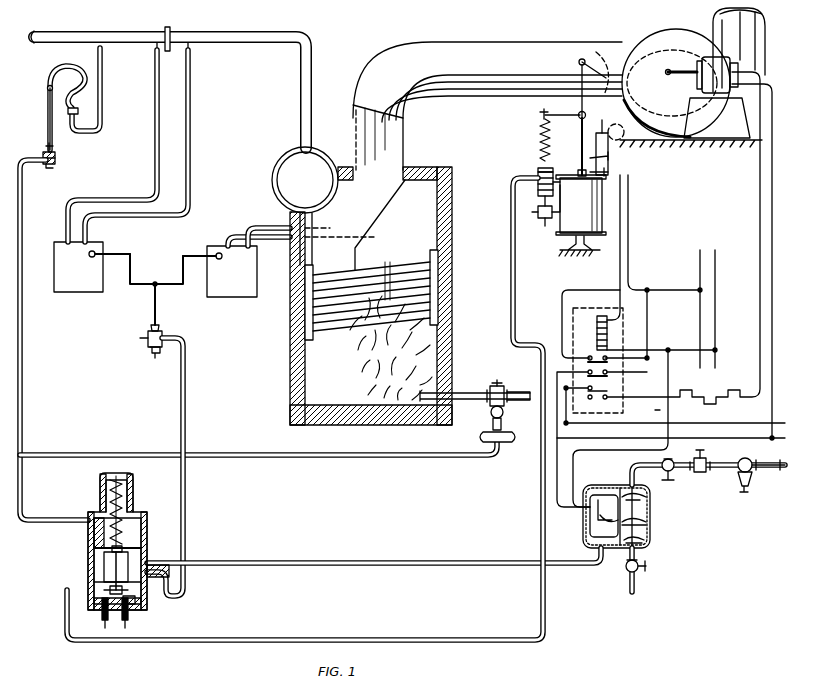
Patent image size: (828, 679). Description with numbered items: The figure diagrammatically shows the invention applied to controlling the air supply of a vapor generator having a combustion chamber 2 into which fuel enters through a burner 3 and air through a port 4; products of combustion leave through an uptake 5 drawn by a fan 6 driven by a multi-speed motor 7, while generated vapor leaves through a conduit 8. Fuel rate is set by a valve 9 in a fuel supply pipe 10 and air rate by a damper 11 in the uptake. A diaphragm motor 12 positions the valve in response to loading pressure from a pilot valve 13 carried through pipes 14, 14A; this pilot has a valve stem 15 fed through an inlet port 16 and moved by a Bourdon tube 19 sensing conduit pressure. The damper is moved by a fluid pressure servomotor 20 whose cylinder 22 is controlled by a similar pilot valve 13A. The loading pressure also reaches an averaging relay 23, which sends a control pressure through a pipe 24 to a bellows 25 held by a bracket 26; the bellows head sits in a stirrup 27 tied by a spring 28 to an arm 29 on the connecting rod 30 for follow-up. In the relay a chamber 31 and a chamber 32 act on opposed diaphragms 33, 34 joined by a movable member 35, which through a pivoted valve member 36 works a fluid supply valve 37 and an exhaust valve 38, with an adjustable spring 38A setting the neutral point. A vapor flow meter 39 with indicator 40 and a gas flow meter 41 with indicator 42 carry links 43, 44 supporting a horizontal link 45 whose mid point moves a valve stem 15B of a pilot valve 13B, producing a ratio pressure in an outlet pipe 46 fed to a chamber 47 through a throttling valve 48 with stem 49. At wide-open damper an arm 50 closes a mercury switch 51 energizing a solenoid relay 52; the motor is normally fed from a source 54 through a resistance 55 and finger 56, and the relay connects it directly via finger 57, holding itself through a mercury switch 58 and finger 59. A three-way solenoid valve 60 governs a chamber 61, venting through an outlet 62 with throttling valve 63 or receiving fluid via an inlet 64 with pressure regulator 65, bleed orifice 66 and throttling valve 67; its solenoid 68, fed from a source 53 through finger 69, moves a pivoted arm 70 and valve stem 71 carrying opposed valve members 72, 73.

The combustion chamber 2 is at (371, 296).
The burner 3 is at (426, 390).
The port 4 is at (450, 397).
The uptake 5 is at (547, 42).
The fan 6 is at (652, 30).
The multi-speed motor 7 is at (706, 40).
The conduit 8 is at (268, 45).
The valve 9 is at (492, 382).
The fuel supply pipe 10 is at (510, 390).
The damper 11 is at (606, 55).
The diaphragm motor 12 is at (512, 416).
The pilot valve 13 is at (54, 163).
The pilot valve 13A is at (540, 222).
The pilot valve 13B is at (148, 342).
The pipe 14 is at (20, 360).
The pipe 14A is at (143, 447).
The valve stem 15 is at (44, 120).
The valve stem 15B is at (155, 318).
The inlet port 16 is at (56, 155).
The Bourdon tube 19 is at (60, 66).
The fluid pressure servomotor 20 is at (577, 254).
The cylinder 22 is at (602, 200).
The averaging relay 23 is at (140, 503).
The pipe 24 is at (288, 640).
The bellows 25 is at (538, 180).
The bracket 26 is at (555, 180).
The stirrup 27 is at (540, 170).
The spring 28 is at (542, 150).
The arm 29 is at (545, 113).
The connecting rod 30 is at (562, 124).
The chamber 31 is at (68, 540).
The chamber 32 is at (65, 578).
The diaphragm 33 is at (138, 530).
The diaphragm 34 is at (136, 578).
The movable member 35 is at (62, 552).
The pivoted valve member 36 is at (140, 596).
The fluid supply valve 37 is at (70, 605).
The exhaust valve 38 is at (104, 615).
The adjustable spring 38A is at (92, 520).
The meter 39 is at (88, 240).
The indicator 40 is at (110, 253).
The meter 41 is at (256, 280).
The indicator 42 is at (206, 256).
The link 43 is at (131, 262).
The link 44 is at (182, 270).
The horizontal link 45 is at (164, 285).
The outlet pipe 46 is at (183, 400).
The chamber 47 is at (70, 567).
The throttling valve 48 is at (170, 565).
The stem 49 is at (172, 575).
The arm 50 is at (596, 133).
The mercury switch 51 is at (612, 160).
The solenoid relay 52 is at (625, 330).
The source 53 is at (715, 248).
The source 54 is at (720, 430).
The resistance 55 is at (708, 398).
The finger 56 is at (674, 403).
The finger 57 is at (674, 238).
The mercury switch 58 is at (610, 172).
The finger 59 is at (607, 360).
The three-way solenoid valve 60 is at (652, 508).
The chamber 61 is at (136, 552).
The outlet 62 is at (636, 585).
The throttling valve 63 is at (628, 570).
The inlet 64 is at (765, 470).
The pressure regulator 65 is at (748, 475).
The bleed orifice 66 is at (708, 458).
The throttling valve 67 is at (676, 470).
The solenoid 68 is at (590, 500).
The finger 69 is at (602, 437).
The pivoted arm 70 is at (650, 524).
The valve stem 71 is at (650, 540).
The valve member 72 is at (646, 492).
The valve member 73 is at (600, 552).